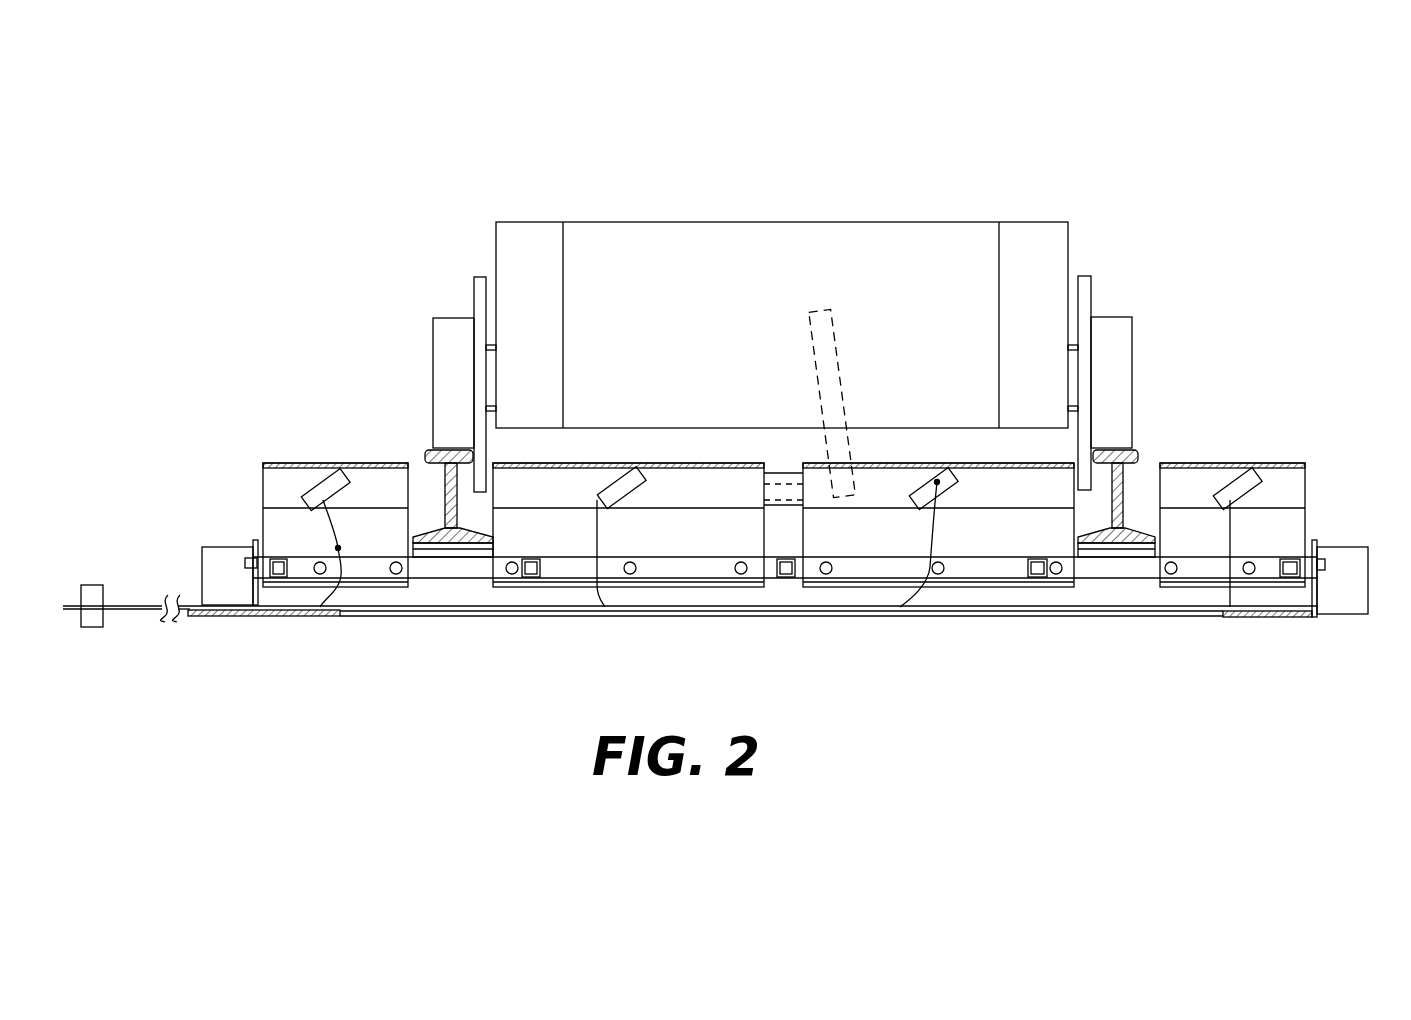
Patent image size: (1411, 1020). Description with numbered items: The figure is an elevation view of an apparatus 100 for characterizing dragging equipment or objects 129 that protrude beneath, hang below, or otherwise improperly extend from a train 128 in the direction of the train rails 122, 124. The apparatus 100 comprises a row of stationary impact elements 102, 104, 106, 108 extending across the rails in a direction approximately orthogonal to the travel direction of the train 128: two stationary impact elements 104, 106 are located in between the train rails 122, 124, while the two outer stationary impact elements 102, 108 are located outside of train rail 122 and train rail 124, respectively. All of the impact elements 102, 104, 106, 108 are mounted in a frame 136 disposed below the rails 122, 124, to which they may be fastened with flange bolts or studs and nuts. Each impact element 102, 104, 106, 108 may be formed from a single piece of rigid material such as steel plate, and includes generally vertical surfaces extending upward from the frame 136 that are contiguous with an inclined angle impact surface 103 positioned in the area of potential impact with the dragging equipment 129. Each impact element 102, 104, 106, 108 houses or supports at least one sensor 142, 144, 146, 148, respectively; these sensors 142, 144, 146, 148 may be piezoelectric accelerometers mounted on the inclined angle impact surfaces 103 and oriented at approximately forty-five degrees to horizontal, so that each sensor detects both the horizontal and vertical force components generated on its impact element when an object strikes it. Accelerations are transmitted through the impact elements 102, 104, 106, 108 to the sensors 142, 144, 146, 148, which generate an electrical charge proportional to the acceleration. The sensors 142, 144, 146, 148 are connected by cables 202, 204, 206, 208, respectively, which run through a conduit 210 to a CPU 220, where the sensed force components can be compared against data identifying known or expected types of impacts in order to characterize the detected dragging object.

The apparatus 100 is at (667, 135).
The stationary impact element 102 is at (278, 523).
The inclined angle impact surface 103 is at (283, 485).
The stationary impact element 104 is at (682, 528).
The stationary impact element 106 is at (975, 530).
The stationary impact element 108 is at (1195, 533).
The train rail 122 is at (432, 448).
The train rail 124 is at (1137, 448).
The train 128 is at (973, 183).
The dragging equipment or object 129 is at (815, 313).
The frame 136 is at (255, 542).
The sensor 142 is at (323, 488).
The sensor 144 is at (618, 490).
The sensor 146 is at (918, 493).
The sensor 148 is at (1240, 476).
The cable 202 is at (337, 532).
The cable 204 is at (597, 537).
The cable 206 is at (933, 535).
The cable 208 is at (1230, 528).
The conduit 210 is at (135, 613).
The CPU 220 is at (93, 627).